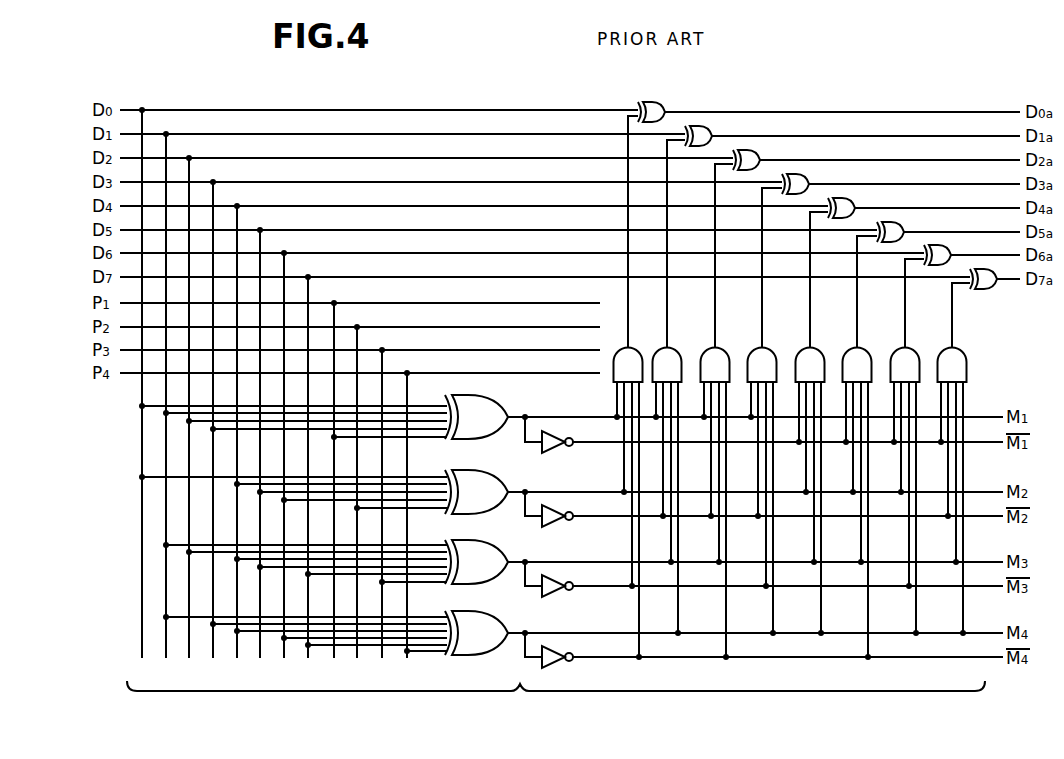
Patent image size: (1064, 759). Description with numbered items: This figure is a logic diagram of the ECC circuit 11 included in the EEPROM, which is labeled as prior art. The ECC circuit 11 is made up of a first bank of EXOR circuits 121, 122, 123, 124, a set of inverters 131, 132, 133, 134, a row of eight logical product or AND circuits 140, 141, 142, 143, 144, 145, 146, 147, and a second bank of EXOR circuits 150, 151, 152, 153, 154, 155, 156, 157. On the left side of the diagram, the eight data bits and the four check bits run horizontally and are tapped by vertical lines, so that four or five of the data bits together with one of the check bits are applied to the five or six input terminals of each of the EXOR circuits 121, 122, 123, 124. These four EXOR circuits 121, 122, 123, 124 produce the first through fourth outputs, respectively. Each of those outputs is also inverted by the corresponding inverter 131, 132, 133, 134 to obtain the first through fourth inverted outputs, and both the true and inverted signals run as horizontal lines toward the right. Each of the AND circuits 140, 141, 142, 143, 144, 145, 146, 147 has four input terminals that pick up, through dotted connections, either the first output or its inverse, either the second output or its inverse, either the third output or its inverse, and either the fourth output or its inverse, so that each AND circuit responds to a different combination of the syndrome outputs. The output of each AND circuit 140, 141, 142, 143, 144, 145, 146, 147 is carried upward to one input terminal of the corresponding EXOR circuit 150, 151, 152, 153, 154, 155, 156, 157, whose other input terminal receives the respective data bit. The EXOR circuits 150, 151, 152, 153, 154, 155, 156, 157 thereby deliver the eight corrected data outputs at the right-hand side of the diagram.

The ECC circuit 11 is at (556, 701).
The EXOR circuit 121 is at (497, 401).
The EXOR circuit 122 is at (497, 476).
The EXOR circuit 123 is at (497, 546).
The EXOR circuit 124 is at (497, 617).
The inverter 131 is at (556, 453).
The inverter 132 is at (556, 527).
The inverter 133 is at (556, 597).
The inverter 134 is at (556, 668).
The AND circuit 140 is at (637, 349).
The AND circuit 141 is at (676, 349).
The AND circuit 142 is at (724, 349).
The AND circuit 143 is at (771, 349).
The AND circuit 144 is at (819, 349).
The AND circuit 145 is at (866, 349).
The AND circuit 146 is at (914, 349).
The AND circuit 147 is at (964, 350).
The EXOR circuit 150 is at (660, 103).
The EXOR circuit 151 is at (707, 127).
The EXOR circuit 152 is at (755, 151).
The EXOR circuit 153 is at (804, 175).
The EXOR circuit 154 is at (850, 199).
The EXOR circuit 155 is at (899, 223).
The EXOR circuit 156 is at (946, 246).
The EXOR circuit 157 is at (985, 289).